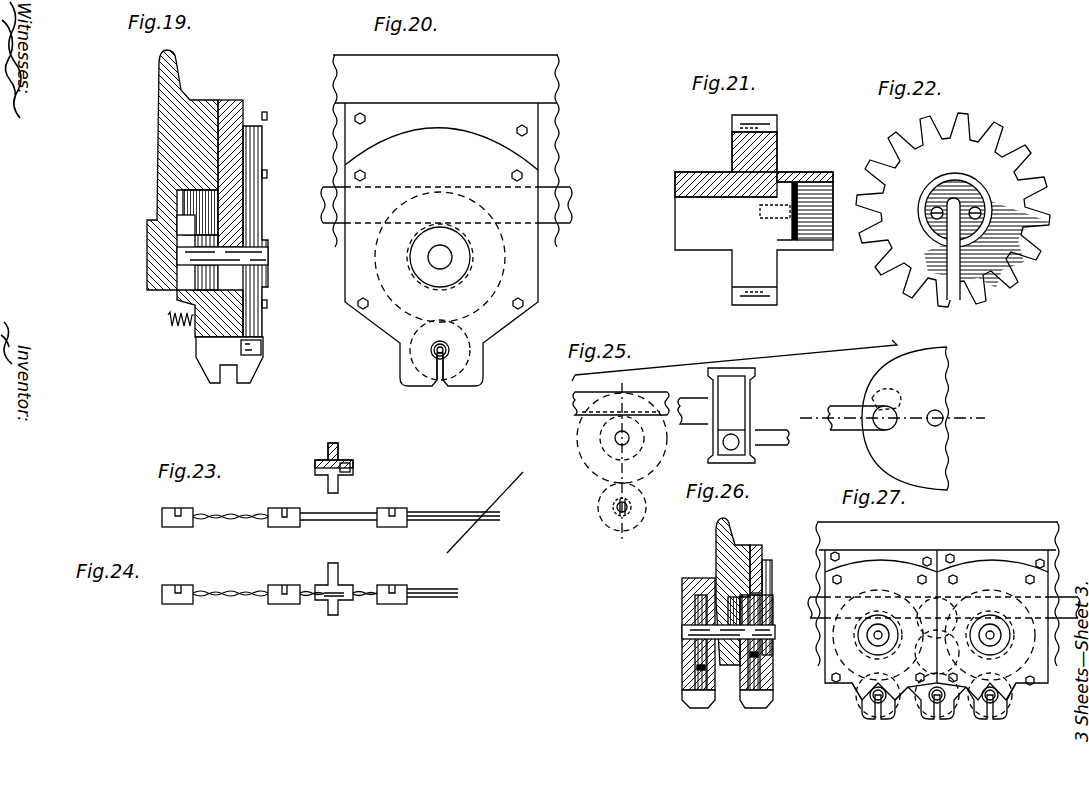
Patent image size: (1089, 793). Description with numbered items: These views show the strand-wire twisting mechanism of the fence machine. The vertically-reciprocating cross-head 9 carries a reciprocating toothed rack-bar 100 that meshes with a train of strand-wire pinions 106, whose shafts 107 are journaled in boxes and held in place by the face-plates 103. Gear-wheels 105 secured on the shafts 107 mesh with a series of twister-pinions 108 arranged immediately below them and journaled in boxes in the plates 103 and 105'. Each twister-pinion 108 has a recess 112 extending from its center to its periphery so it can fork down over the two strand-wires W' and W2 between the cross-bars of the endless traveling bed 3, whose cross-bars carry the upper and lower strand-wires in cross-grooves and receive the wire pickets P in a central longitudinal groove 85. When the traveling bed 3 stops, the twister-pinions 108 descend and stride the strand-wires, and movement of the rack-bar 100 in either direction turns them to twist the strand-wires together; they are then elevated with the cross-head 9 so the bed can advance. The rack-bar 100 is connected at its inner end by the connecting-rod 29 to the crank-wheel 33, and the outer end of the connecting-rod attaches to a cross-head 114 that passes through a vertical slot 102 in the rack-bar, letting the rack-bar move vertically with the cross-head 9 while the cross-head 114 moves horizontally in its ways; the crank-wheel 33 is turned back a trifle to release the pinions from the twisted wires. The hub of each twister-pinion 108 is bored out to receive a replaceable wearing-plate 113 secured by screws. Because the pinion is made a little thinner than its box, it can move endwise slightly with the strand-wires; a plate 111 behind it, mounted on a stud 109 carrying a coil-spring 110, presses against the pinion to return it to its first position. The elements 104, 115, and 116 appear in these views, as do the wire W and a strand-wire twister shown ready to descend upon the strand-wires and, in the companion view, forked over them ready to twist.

In FIG. 19, the cross-head 9 is at (150, 155).
In FIG. 20, the cross-head 9 is at (446, 151).
In FIG. 26, the cross-head 9 is at (714, 541).
In FIG. 27, the cross-head 9 is at (937, 594).
In FIG. 19, the toothed rack-bar 100 is at (183, 196).
In FIG. 20, the toothed rack-bar 100 is at (570, 205).
In FIG. 25, the toothed rack-bar 100 is at (693, 400).
In FIG. 26, the toothed rack-bar 100 is at (742, 597).
In FIG. 27, the toothed rack-bar 100 is at (944, 625).
In FIG. 25, the vertical slot 102 is at (734, 397).
In FIG. 19, the face-plates 103 is at (262, 190).
In FIG. 20, the face-plates 103 is at (441, 218).
In FIG. 26, the face-plates 103 is at (772, 565).
In FIG. 27, the face-plates 103 is at (936, 622).
In FIG. 19, the upper plate portion 104 is at (243, 103).
In FIG. 20, the upper plate portion 104 is at (441, 122).
In FIG. 26, the upper plate portion 104 is at (762, 550).
In FIG. 27, the upper plate portion 104 is at (937, 559).
In FIG. 19, the gear-wheels 105 is at (265, 213).
In FIG. 20, the gear-wheels 105 is at (487, 257).
In FIG. 25, the gear-wheels 105 is at (603, 461).
In FIG. 26, the gear-wheels 105 is at (777, 651).
In FIG. 27, the gear-wheels 105 is at (934, 635).
In FIG. 19, the plates 105' is at (174, 312).
In FIG. 26, the plates 105' is at (727, 702).
In FIG. 19, the strand-wire pinions 106 is at (218, 232).
In FIG. 20, the strand-wire pinions 106 is at (465, 262).
In FIG. 25, the strand-wire pinions 106 is at (600, 440).
In FIG. 26, the strand-wire pinions 106 is at (762, 652).
In FIG. 19, the shafts 107 is at (268, 256).
In FIG. 20, the shafts 107 is at (445, 262).
In FIG. 25, the shafts 107 is at (616, 442).
In FIG. 26, the shafts 107 is at (775, 633).
In FIG. 19, the twister-pinions 108 is at (264, 346).
In FIG. 20, the twister-pinions 108 is at (460, 355).
In FIG. 21, the twister-pinions 108 is at (754, 210).
In FIG. 22, the twister-pinions 108 is at (953, 210).
In FIG. 23, the twister-pinions 108 is at (338, 447).
In FIG. 24, the twister-pinions 108 is at (341, 606).
In FIG. 25, the twister-pinions 108 is at (598, 505).
In FIG. 26, the twister-pinions 108 is at (682, 692).
In FIG. 27, the twister-pinions 108 is at (975, 708).
In FIG. 19, the stud 109 is at (167, 320).
In FIG. 19, the coil-spring 110 is at (178, 325).
In FIG. 19, the plate 111 is at (190, 325).
In FIG. 20, the recess 112 is at (446, 388).
In FIG. 22, the recess 112 is at (955, 296).
In FIG. 25, the recess 112 is at (618, 520).
In FIG. 19, the wearing-plate 113 is at (262, 355).
In FIG. 20, the wearing-plate 113 is at (436, 347).
In FIG. 21, the wearing-plate 113 is at (787, 238).
In FIG. 22, the wearing-plate 113 is at (1050, 225).
In FIG. 23, the wearing-plate 113 is at (350, 468).
In FIG. 25, the cross-head 114 is at (722, 443).
In FIG. 26, the housing 115 is at (690, 593).
In FIG. 26, the gear 116 is at (696, 610).
In FIG. 25, the connecting-rod 29 is at (778, 445).
In FIG. 25, the crank-wheel 33 is at (905, 418).
In FIG. 23, the endless traveling bed 3 is at (162, 515).
In FIG. 24, the endless traveling bed 3 is at (193, 604).
In FIG. 23, the central longitudinal groove 85 is at (284, 508).
In FIG. 24, the central longitudinal groove 85 is at (284, 585).
In FIG. 23, the wire W is at (230, 504).
In FIG. 24, the wire W is at (230, 581).
In FIG. 23, the strand-wire W' is at (453, 505).
In FIG. 23, the strand-wire W2 is at (338, 526).
In FIG. 23, the wire pickets P is at (485, 512).